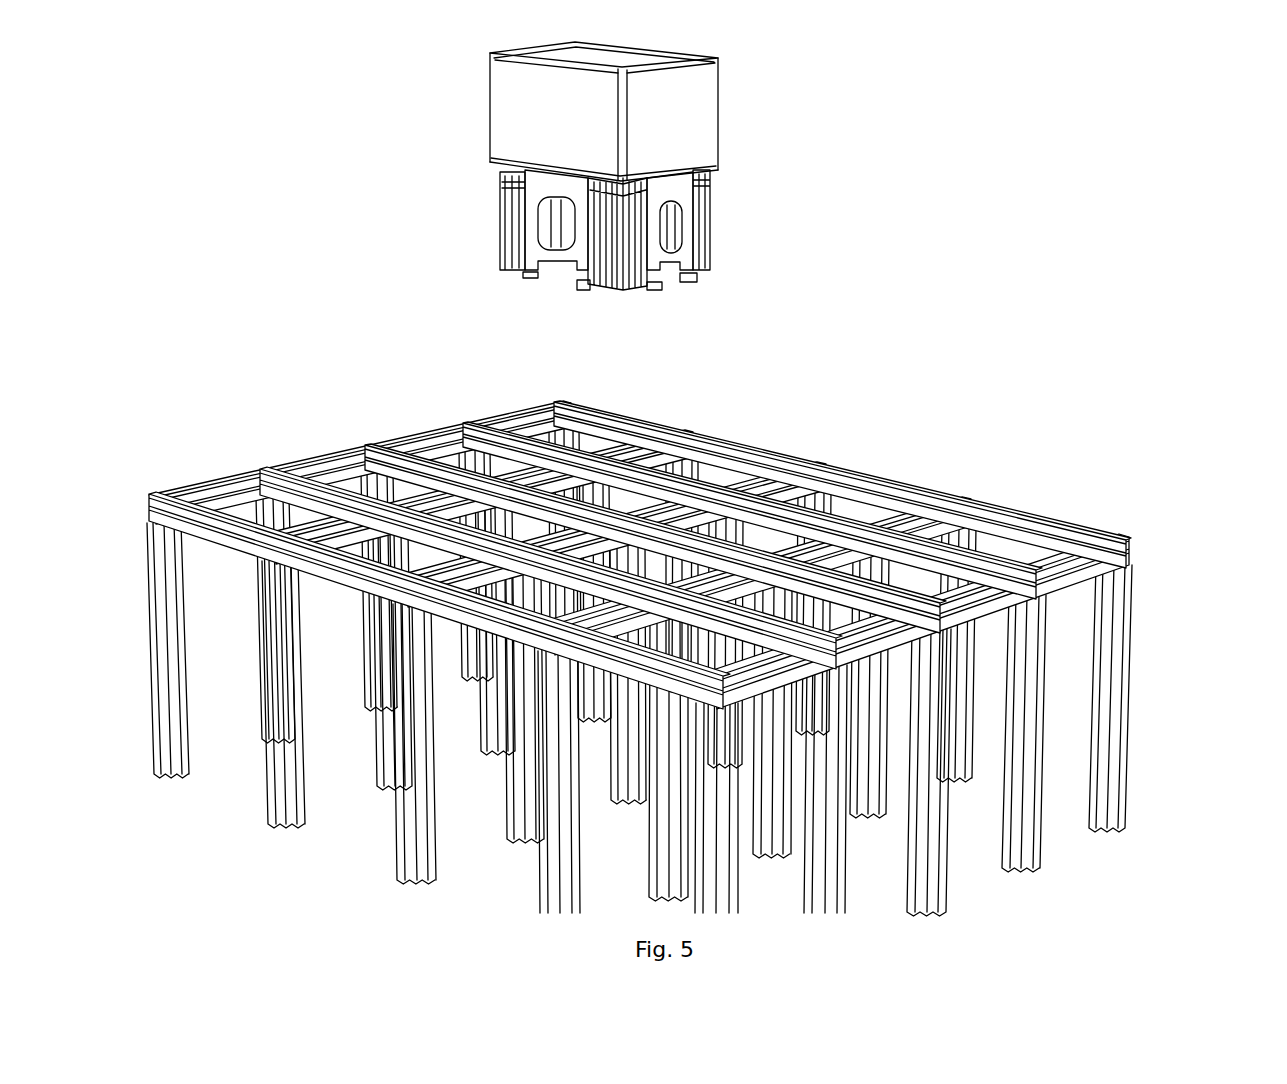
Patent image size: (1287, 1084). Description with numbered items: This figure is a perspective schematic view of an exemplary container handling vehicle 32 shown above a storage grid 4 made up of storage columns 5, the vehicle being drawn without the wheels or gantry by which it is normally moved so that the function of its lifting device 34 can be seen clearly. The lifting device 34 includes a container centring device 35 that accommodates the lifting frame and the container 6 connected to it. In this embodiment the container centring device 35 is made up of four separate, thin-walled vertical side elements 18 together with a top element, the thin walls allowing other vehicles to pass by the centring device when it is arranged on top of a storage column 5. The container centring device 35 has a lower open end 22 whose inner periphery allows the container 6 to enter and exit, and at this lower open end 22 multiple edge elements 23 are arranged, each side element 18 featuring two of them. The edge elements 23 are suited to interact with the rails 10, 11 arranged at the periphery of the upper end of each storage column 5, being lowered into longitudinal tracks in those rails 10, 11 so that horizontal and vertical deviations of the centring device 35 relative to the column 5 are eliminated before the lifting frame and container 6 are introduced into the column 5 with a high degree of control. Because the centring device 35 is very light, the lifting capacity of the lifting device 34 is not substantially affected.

The grid 4 is at (703, 619).
The storage column 5 is at (634, 554).
The container 6 is at (615, 250).
The rail 10 is at (707, 530).
The rail 11 is at (707, 567).
The vertical side element 18 is at (542, 187).
The lower open end 22 is at (548, 304).
The edge element 23 is at (687, 278).
The container handling vehicle 32 is at (634, 212).
The lifting device 34 is at (480, 168).
The container centring device 35 is at (702, 252).